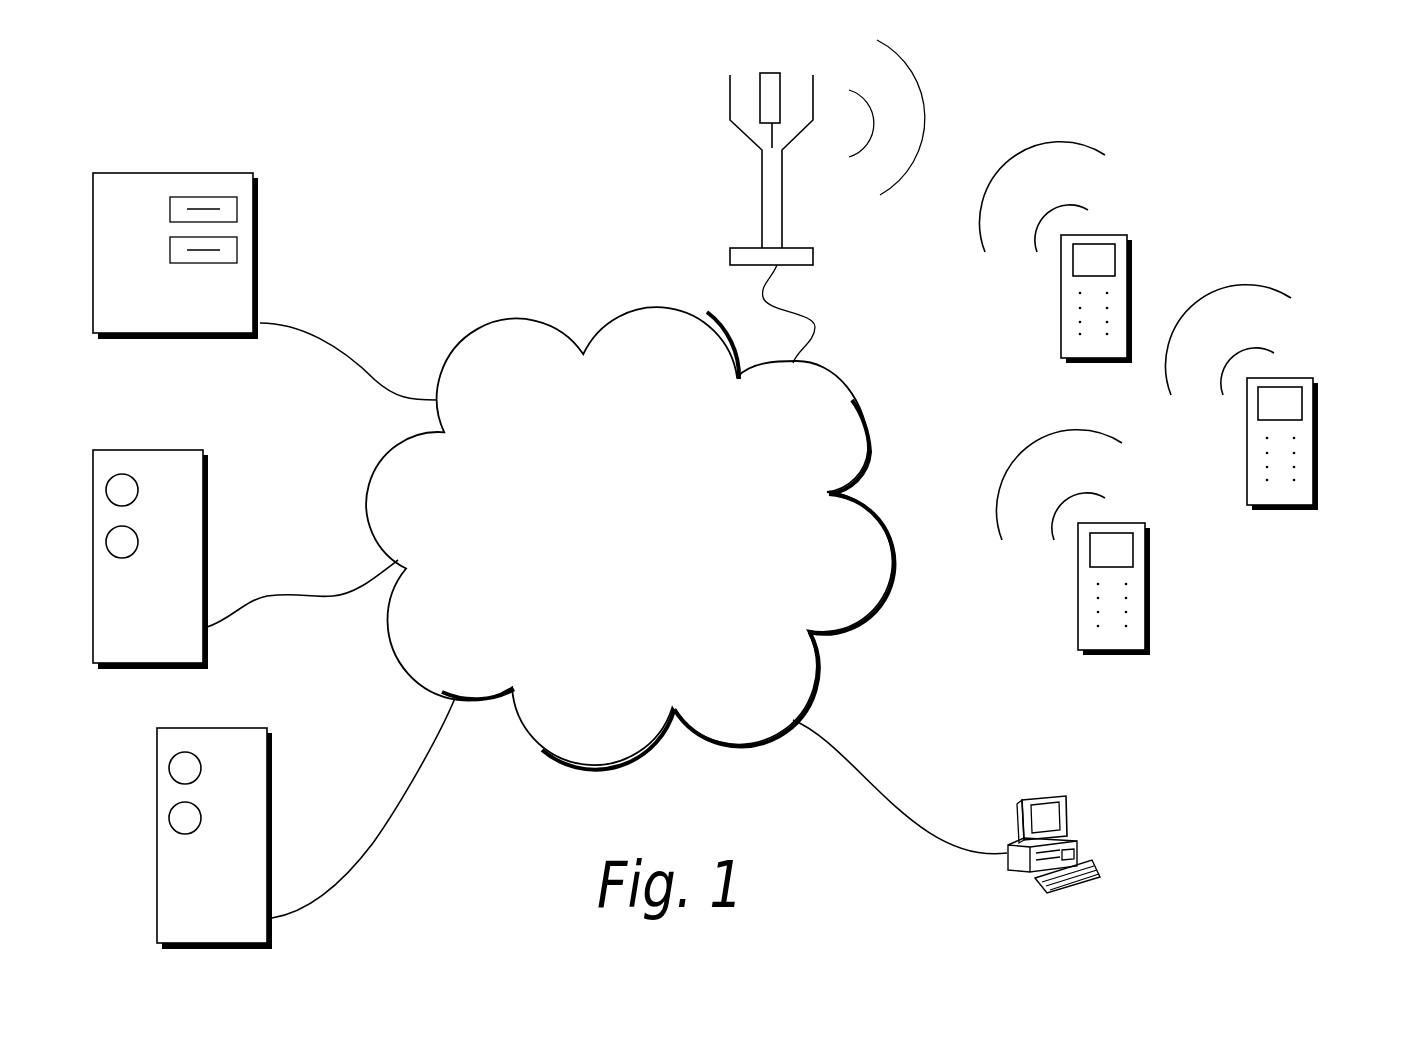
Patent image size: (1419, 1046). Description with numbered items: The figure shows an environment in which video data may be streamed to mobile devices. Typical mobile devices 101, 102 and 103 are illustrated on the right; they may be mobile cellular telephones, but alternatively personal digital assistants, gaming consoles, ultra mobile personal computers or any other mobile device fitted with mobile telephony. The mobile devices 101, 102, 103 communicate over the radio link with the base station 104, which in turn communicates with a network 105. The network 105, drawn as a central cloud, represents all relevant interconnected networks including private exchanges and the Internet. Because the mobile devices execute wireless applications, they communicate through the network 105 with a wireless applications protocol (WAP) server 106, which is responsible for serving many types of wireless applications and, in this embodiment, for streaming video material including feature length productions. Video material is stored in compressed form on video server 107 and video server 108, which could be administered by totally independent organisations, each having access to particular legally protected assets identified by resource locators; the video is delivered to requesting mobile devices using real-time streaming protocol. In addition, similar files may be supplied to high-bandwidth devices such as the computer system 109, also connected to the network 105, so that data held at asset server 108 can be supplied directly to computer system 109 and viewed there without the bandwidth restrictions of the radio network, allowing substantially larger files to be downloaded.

The mobile device 101 is at (1073, 348).
The mobile device 102 is at (1303, 488).
The mobile device 103 is at (1133, 632).
The base station 104 is at (767, 218).
The network 105 is at (663, 555).
The wireless applications protocol (WAP) server 106 is at (242, 302).
The video server 107 is at (187, 517).
The video server 108 is at (250, 798).
The computer system 109 is at (1097, 865).